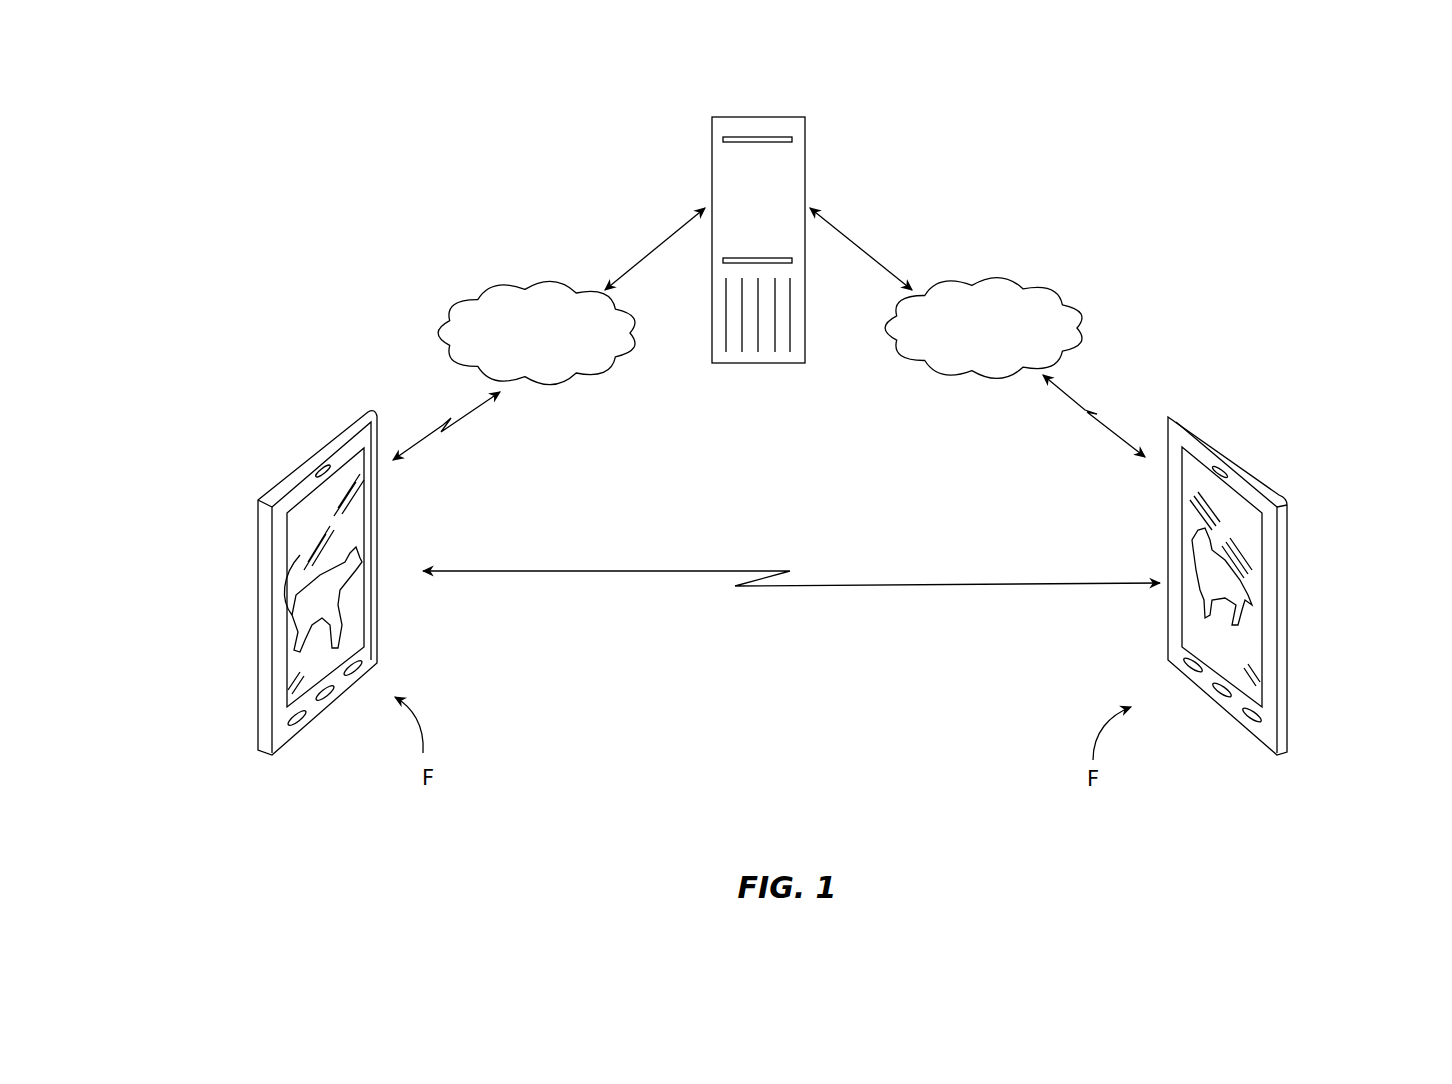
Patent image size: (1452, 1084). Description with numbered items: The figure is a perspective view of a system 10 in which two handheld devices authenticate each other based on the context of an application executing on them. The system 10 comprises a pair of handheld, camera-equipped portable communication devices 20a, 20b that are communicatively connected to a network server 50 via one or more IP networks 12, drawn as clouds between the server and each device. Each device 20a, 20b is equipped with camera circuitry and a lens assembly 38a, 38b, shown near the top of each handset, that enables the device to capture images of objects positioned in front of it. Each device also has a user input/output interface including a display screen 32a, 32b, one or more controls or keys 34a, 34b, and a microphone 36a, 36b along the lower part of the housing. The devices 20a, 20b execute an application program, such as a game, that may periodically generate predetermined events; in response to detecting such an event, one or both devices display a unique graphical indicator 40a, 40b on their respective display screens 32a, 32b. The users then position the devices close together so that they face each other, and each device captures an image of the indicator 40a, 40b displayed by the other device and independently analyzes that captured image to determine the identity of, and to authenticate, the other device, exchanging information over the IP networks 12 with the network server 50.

The system 10 is at (978, 121).
The network server 50 is at (744, 201).
The IP network 12 is at (527, 360).
The portable communication device 20a is at (243, 478).
The portable communication device 20b is at (1307, 478).
The display screen 32a is at (297, 542).
The display screen 32b is at (1252, 542).
The controls or keys 34a is at (277, 720).
The controls or keys 34b is at (1266, 722).
The microphone 36a is at (328, 696).
The microphone 36b is at (1220, 698).
The lens assembly 38a is at (327, 465).
The lens assembly 38b is at (1221, 466).
The unique graphical indicator 40a is at (307, 617).
The unique graphical indicator 40b is at (1245, 600).